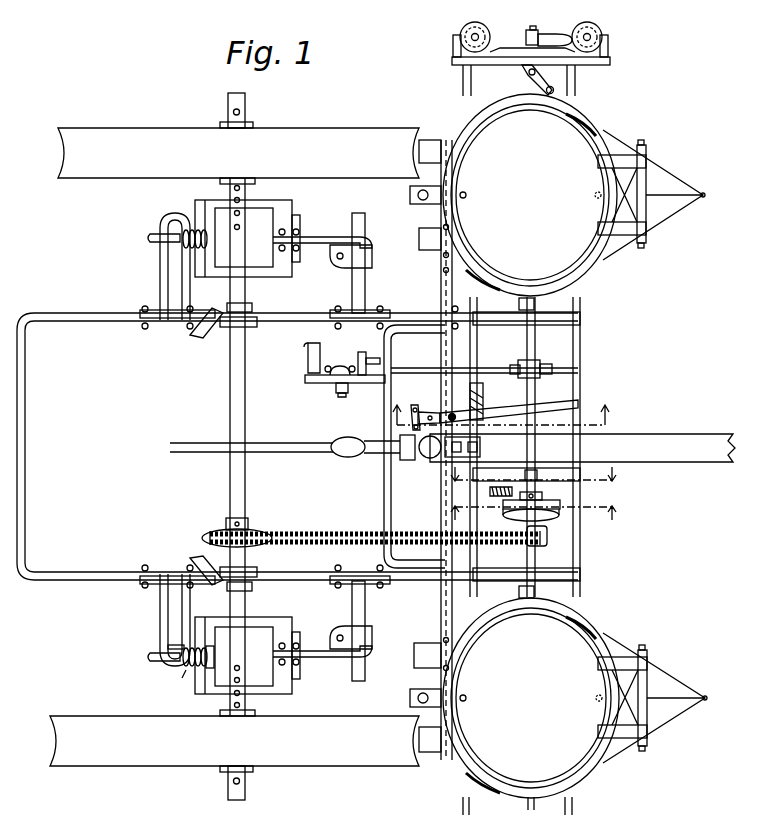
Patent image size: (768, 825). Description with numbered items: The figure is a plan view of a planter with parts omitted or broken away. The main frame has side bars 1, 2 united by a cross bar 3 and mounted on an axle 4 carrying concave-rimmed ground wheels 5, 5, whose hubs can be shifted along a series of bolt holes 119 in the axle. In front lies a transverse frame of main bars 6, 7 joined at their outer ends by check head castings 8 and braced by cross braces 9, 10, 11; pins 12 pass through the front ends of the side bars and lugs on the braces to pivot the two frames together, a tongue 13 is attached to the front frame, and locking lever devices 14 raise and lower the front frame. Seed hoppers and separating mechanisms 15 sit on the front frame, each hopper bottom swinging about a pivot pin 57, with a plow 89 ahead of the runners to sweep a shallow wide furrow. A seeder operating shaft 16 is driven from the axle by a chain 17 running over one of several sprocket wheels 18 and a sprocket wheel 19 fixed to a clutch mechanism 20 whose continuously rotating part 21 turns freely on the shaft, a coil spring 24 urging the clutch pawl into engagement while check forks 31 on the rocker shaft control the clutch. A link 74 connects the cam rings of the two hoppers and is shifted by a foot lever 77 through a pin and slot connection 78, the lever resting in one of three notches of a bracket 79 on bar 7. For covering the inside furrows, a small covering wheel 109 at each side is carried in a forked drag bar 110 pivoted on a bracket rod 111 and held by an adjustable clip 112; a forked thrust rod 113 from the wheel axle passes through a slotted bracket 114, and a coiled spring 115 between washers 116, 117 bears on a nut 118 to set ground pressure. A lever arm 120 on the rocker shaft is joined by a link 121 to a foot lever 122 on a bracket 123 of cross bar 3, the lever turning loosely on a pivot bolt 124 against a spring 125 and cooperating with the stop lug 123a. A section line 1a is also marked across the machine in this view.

The side bar 1 is at (105, 322).
The section line 1a is at (509, 405).
The side bar 2 is at (92, 578).
The cross bar 3 is at (384, 511).
The axle 4 is at (247, 494).
The ground wheel 5 is at (145, 170).
The main bar 6 is at (582, 356).
The main bar 7 is at (478, 357).
The check head casting 8 is at (506, 50).
The cross brace 9 is at (566, 318).
The cross brace 10 is at (562, 580).
The cross brace 11 is at (554, 470).
The pin 12 is at (518, 304).
The tongue 13 is at (697, 434).
The locking lever devices 14 is at (372, 452).
The seed container and separating mechanism 15 is at (600, 262).
The seeder operating shaft 16 is at (536, 396).
The chain 17 is at (322, 534).
The sprocket wheel 18 is at (202, 536).
The sprocket wheel 19 is at (548, 538).
The clutch mechanism 20 is at (512, 510).
The continuously rotating clutch part 21 is at (552, 512).
The coil spring 24 is at (500, 492).
The check fork 31 is at (560, 36).
The pivot pin 57 is at (646, 150).
The link 74 is at (440, 357).
The foot lever 77 is at (512, 406).
The pin and slot connection 78 is at (450, 412).
The bracket 79 is at (484, 392).
The sweep or plow 89 is at (690, 196).
The covering wheel 109 is at (278, 205).
The forked drag bar 110 is at (318, 240).
The bracket rod 111 is at (366, 293).
The clip 112 is at (374, 258).
The forked thrust rod 113 is at (150, 238).
The slotted bracket 114 is at (160, 272).
The coiled spring 115 is at (184, 672).
The washer 116 is at (168, 646).
The washer 117 is at (206, 650).
The nut 118 is at (198, 648).
The bolt hole 119 is at (232, 188).
The lever arm 120 is at (542, 364).
The link 121 is at (516, 368).
The foot lever 122 is at (308, 360).
The bracket 123 is at (362, 352).
The stop lug 123a is at (312, 382).
The pivot bolt 124 is at (340, 366).
The spring 125 is at (336, 392).